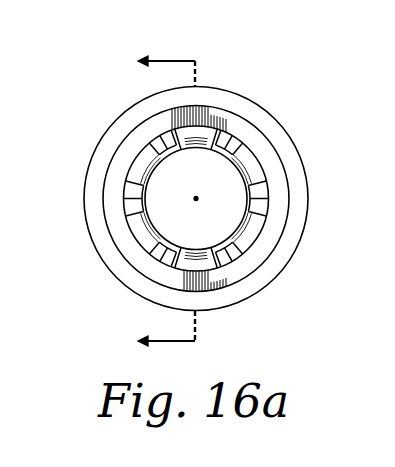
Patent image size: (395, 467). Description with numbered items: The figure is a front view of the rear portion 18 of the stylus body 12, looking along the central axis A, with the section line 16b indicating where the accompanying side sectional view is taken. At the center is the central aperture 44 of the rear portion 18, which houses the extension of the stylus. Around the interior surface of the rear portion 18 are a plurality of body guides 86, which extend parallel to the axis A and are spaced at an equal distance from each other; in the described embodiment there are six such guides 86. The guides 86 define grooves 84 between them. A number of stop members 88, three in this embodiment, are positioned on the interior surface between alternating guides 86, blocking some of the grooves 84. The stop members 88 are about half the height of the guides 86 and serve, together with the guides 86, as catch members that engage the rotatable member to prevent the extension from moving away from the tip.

The stylus body 12 is at (268, 45).
The section line 16b— 16b is at (140, 205).
The rear portion 18 is at (262, 113).
The central aperture 44 is at (125, 252).
The grooves 84 is at (202, 127).
The body guides 86 is at (210, 137).
The stop members 88 is at (136, 160).
The axis A is at (197, 198).